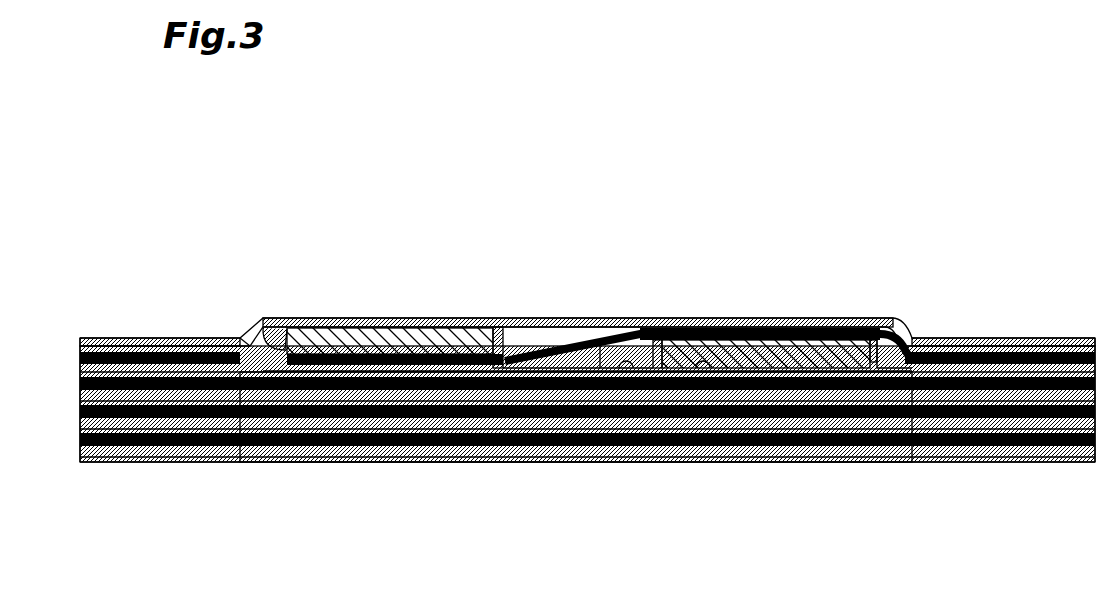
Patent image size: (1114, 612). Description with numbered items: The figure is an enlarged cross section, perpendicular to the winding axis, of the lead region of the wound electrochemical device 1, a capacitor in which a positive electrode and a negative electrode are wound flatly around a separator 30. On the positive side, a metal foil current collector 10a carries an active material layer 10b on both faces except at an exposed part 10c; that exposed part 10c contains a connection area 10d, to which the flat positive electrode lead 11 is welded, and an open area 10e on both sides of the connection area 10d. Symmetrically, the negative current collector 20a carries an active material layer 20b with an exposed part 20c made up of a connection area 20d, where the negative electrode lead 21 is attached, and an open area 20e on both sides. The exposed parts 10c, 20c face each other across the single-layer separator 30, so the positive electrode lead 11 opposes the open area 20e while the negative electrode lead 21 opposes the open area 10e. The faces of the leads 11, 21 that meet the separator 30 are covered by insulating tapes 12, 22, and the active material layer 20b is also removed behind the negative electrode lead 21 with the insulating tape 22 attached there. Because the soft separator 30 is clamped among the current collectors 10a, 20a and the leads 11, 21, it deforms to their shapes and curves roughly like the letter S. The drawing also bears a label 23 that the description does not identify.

The wound electrochemical device 1 is at (1004, 228).
The current collector 10a is at (167, 338).
The active material layer 10b is at (138, 348).
The exposed part 10c is at (563, 253).
The connection area 10d is at (453, 322).
The open area 10e is at (535, 340).
The positive electrode lead 11 is at (386, 345).
The insulating tape 12 is at (264, 332).
The current collector 20a is at (935, 400).
The active material layer 20b is at (996, 385).
The exposed part 20c is at (732, 533).
The connection area 20d is at (703, 368).
The open area 20e is at (627, 368).
The negative electrode lead 21 is at (760, 348).
The insulating tape 22 is at (893, 322).
The insulating base of rigid board 23 is at (782, 392).
The separator 30 is at (596, 350).